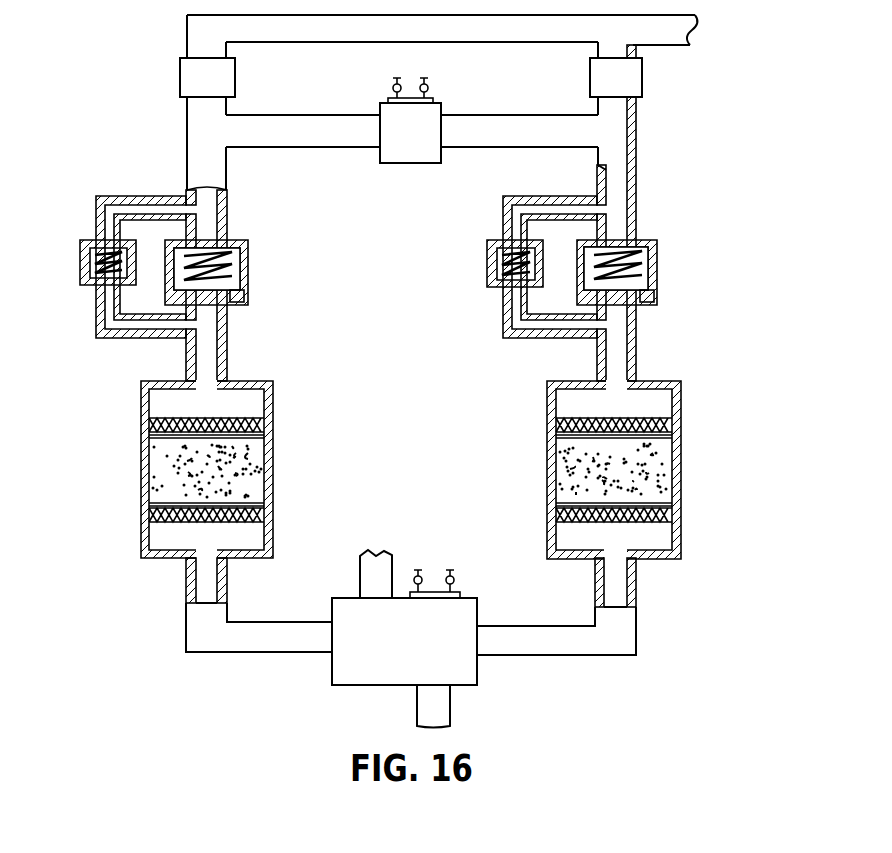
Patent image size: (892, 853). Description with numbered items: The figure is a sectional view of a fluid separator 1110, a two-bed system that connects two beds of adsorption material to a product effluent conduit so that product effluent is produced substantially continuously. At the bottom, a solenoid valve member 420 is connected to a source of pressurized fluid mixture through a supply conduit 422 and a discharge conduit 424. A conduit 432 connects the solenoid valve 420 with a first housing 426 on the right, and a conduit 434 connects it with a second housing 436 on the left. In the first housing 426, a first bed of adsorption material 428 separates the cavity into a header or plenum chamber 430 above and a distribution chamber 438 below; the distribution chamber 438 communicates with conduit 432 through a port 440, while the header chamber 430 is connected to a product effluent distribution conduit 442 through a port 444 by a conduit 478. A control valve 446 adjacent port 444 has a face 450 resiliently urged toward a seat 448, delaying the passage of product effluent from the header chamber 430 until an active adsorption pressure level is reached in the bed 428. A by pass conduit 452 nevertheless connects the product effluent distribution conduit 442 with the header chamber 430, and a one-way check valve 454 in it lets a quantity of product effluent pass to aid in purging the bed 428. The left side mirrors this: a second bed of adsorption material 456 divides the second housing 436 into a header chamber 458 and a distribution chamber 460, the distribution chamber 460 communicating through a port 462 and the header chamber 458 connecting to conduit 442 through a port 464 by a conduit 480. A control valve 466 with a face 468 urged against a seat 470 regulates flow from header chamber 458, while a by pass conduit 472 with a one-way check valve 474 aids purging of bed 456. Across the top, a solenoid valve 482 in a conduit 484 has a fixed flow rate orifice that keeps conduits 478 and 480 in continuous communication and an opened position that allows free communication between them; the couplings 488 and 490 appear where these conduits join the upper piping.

The fluid separator 1110 is at (178, 675).
The solenoid valve member 420 is at (462, 678).
The supply conduit 422 is at (418, 716).
The discharge conduit 424 is at (375, 573).
The first housing 426 is at (700, 483).
The first bed of adsorption material 428 is at (668, 456).
The header chamber 430 is at (589, 412).
The conduit 432 is at (624, 628).
The conduit 434 is at (196, 617).
The second housing 436 is at (133, 486).
The distribution chamber 438 is at (585, 544).
The port 440 is at (641, 554).
The product effluent distribution conduit 442 is at (690, 45).
The port 444 is at (646, 388).
The control valve 446 is at (670, 240).
The seat 448 is at (652, 297).
The face 450 is at (655, 286).
The by pass conduit 452 is at (512, 227).
The one-way check valve 454 is at (486, 267).
The second bed of adsorption material 456 is at (160, 455).
The header chamber 458 is at (173, 412).
The distribution chamber 460 is at (182, 544).
The port 462 is at (238, 557).
The port 464 is at (232, 388).
The control valve 466 is at (265, 250).
The face 468 is at (250, 272).
The seat 470 is at (244, 298).
The by pass conduit 472 is at (98, 215).
The one-way check valve 474 is at (78, 270).
The conduit 478 is at (632, 106).
The conduit 480 is at (195, 105).
The solenoid valve 482 is at (386, 109).
The conduit 484 is at (506, 117).
The right coupling 488 is at (630, 80).
The left coupling 490 is at (182, 72).